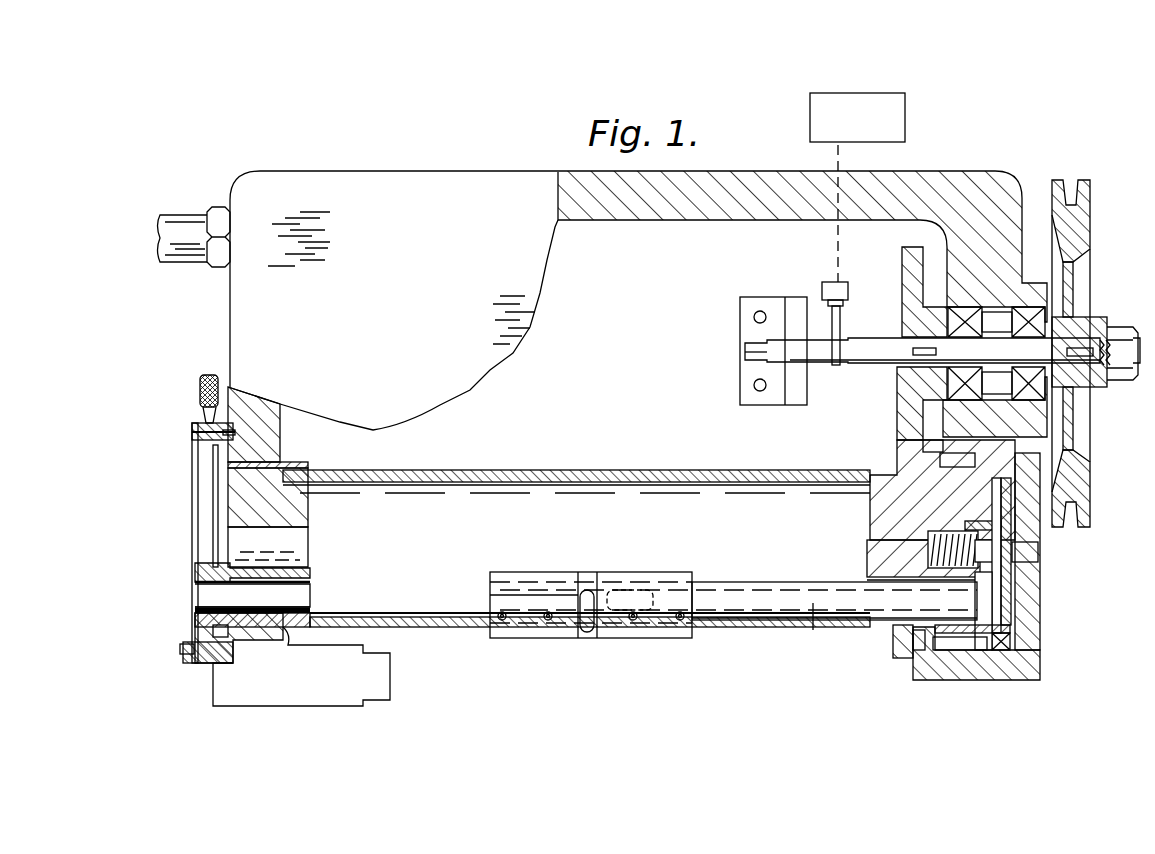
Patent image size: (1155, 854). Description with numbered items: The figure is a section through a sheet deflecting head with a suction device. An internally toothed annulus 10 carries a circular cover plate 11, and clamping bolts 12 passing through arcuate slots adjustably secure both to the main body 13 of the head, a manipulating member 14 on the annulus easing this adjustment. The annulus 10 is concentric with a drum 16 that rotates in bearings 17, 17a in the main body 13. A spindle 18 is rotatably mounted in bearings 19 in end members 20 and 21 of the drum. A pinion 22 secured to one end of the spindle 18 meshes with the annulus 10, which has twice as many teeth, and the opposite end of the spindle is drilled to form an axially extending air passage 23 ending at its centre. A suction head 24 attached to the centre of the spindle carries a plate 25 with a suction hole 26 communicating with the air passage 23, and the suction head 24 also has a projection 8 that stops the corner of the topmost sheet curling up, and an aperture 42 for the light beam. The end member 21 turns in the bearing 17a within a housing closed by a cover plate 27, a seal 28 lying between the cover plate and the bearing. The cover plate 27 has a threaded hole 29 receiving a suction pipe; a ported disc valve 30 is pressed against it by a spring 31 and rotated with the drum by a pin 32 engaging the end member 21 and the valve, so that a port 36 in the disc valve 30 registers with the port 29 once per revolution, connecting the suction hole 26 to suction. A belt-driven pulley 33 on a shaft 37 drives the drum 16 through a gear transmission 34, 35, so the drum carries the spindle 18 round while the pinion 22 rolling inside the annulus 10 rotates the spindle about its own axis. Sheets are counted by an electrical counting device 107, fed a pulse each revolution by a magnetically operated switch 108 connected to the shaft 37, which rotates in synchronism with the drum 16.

The projection 8 is at (667, 602).
The internally toothed annulus 10 is at (205, 421).
The circular cover plate 11 is at (193, 450).
The clamping bolts 12 is at (198, 422).
The main body 13 is at (257, 297).
The manipulating member 14 is at (210, 374).
The drum 16 is at (573, 470).
The bearing 17 is at (232, 463).
The bearing 17a is at (980, 457).
The spindle 18 is at (753, 603).
The bearings 19 is at (257, 612).
The end member 20 is at (247, 490).
The end member 21 is at (893, 493).
The pinion 22 is at (212, 593).
The air passage 23 is at (813, 630).
The suction head 24 is at (668, 647).
The plate 25 is at (527, 635).
The suction hole 26 is at (577, 637).
The cover plate 27 is at (1023, 632).
The seal 28 is at (997, 647).
The threaded hole 29 is at (988, 622).
The ported disc valve 30 is at (993, 565).
The spring 31 is at (1017, 538).
The pin 32 is at (965, 533).
The pulley 33 is at (1065, 293).
The gear transmission 34 is at (910, 272).
The gear transmission 35 is at (902, 643).
The port 36 is at (1005, 607).
The shaft 37 is at (862, 345).
The aperture 42 is at (587, 613).
The electrical counting device 107 is at (887, 125).
The magnetically operated switch 108 is at (833, 290).